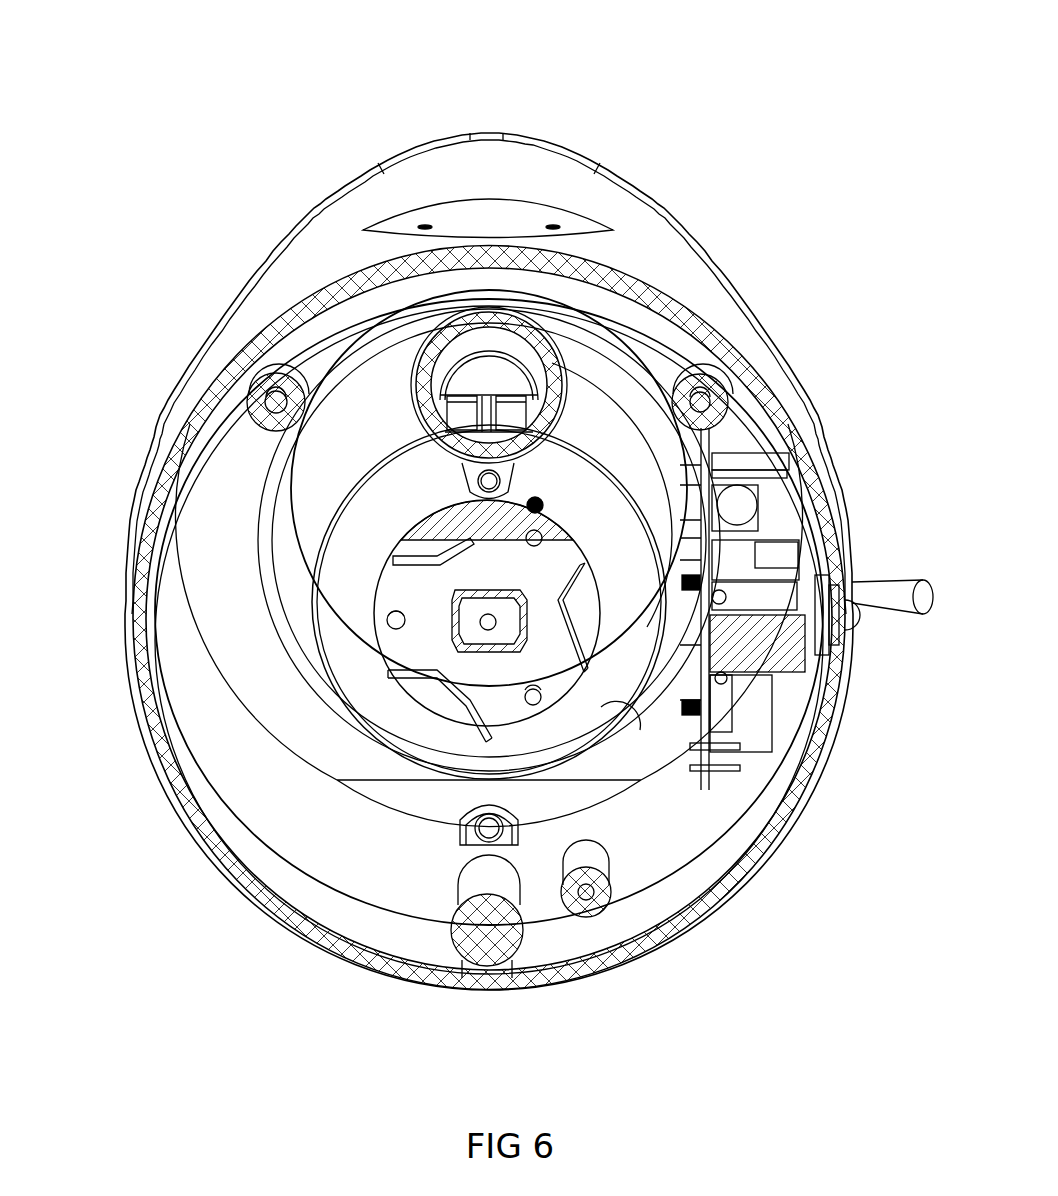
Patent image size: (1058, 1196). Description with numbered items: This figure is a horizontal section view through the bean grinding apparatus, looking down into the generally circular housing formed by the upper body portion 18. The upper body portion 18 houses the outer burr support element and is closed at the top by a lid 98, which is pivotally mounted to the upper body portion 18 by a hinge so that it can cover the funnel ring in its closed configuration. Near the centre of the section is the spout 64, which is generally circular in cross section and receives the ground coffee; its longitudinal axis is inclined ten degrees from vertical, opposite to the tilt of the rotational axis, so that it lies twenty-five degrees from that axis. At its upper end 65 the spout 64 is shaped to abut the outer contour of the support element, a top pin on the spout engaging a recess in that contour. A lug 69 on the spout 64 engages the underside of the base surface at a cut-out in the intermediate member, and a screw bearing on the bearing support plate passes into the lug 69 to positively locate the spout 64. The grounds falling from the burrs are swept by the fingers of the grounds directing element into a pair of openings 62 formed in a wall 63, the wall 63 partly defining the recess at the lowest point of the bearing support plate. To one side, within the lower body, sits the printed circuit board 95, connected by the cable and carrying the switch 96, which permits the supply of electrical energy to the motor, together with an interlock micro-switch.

The lid 98 is at (500, 163).
The upper body portion 18 is at (672, 272).
The openings 62 is at (463, 407).
The wall 63 is at (633, 453).
The spout 64 is at (502, 342).
The upper end 65 is at (430, 437).
The lug 69 is at (473, 482).
The printed circuit board 95 is at (753, 730).
The switch 96 is at (897, 597).